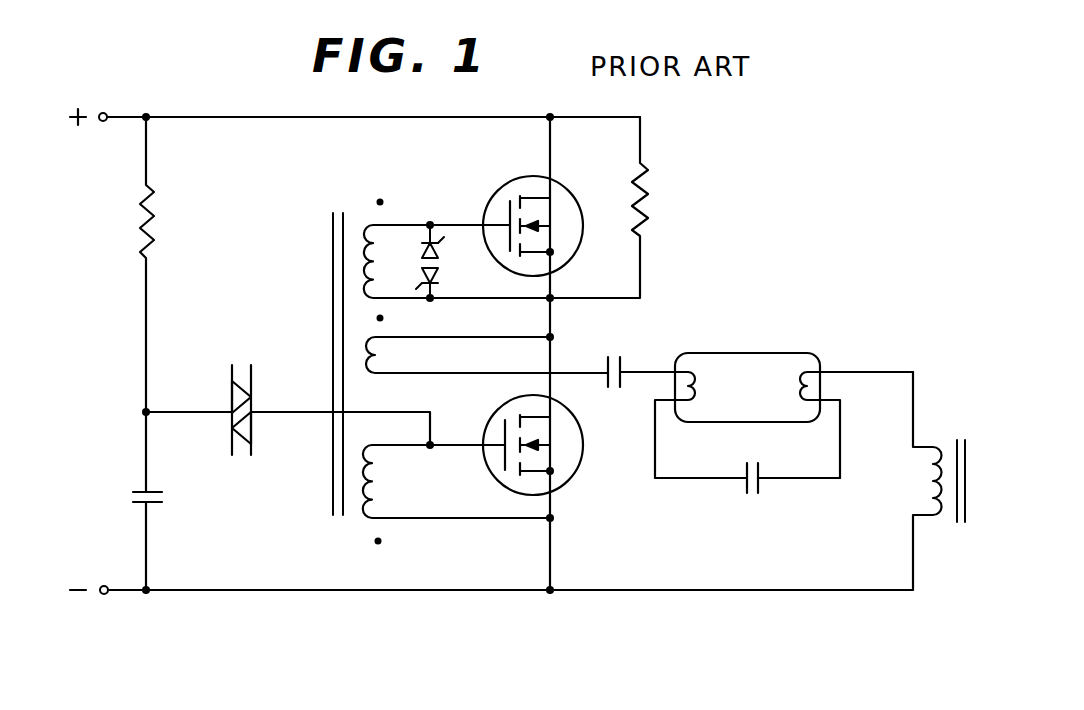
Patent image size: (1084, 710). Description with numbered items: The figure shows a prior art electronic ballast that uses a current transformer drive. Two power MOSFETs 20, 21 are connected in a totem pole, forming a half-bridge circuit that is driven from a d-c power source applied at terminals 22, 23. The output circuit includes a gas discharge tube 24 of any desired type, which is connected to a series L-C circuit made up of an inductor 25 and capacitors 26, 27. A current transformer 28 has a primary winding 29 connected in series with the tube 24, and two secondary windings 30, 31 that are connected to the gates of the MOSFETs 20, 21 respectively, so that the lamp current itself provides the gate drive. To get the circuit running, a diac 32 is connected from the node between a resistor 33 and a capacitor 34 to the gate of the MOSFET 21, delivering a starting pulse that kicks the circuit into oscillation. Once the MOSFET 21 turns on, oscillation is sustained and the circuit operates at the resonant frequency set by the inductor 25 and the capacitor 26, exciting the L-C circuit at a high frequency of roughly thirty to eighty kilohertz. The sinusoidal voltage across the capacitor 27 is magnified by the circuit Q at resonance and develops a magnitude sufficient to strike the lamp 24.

The power MOSFET 20 is at (575, 205).
The power MOSFET 21 is at (576, 464).
The d-c power source terminal 22 is at (108, 94).
The d-c power source terminal 23 is at (110, 598).
The gas discharge tube 24 is at (745, 353).
The inductor 25 is at (930, 476).
The capacitor 26 is at (614, 352).
The capacitor 27 is at (758, 493).
The current transformer 28 is at (325, 302).
The primary winding 29 is at (360, 355).
The secondary winding 30 is at (373, 249).
The secondary winding 31 is at (368, 491).
The diac 32 is at (232, 392).
The resistor 33 is at (155, 222).
The capacitor 34 is at (165, 497).